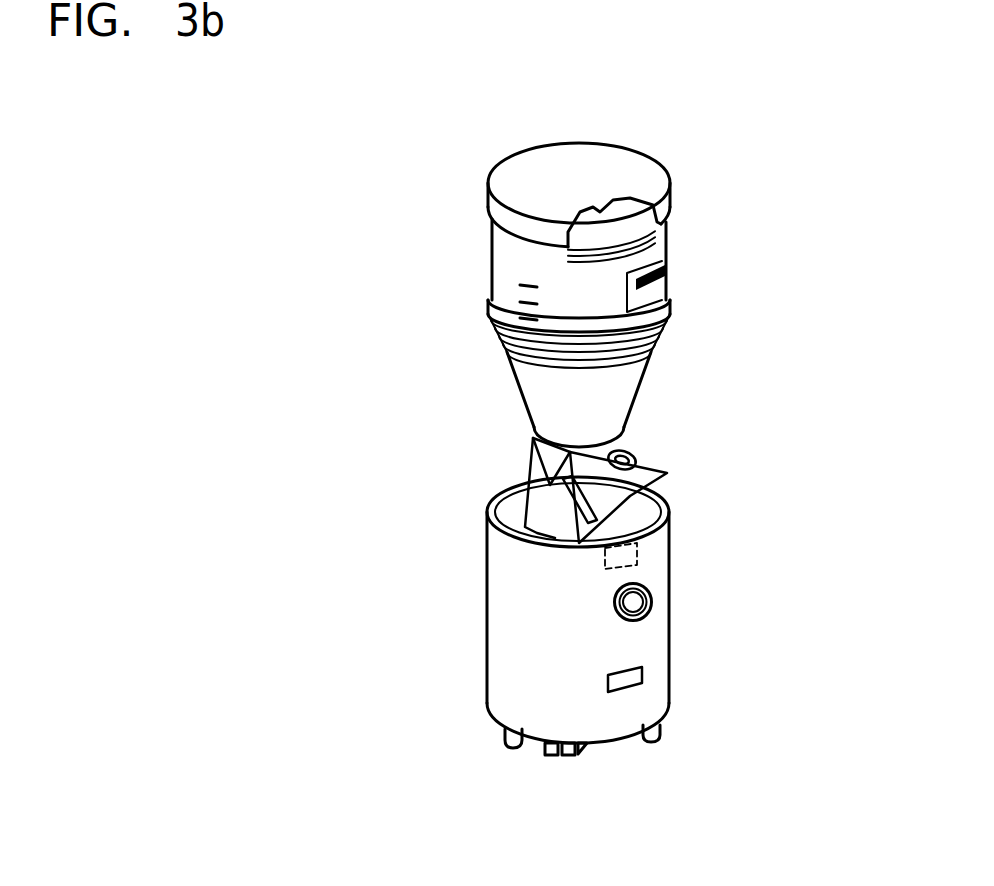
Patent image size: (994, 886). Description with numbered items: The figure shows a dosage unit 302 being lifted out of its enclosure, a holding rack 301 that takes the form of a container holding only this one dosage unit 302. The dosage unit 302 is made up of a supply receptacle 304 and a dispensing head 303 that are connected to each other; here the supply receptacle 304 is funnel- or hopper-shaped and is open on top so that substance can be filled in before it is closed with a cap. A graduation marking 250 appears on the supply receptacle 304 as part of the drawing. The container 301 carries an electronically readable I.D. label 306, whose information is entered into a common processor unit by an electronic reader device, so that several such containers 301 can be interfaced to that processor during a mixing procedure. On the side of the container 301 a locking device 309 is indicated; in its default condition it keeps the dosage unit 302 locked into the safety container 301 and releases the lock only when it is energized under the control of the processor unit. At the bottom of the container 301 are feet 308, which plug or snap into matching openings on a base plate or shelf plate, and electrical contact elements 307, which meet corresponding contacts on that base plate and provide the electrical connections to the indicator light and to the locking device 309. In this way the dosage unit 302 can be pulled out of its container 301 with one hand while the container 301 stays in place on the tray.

The dosage unit 302 is at (504, 121).
The volume graduation mark 250 is at (520, 267).
The supply receptacle 304 is at (560, 398).
The holding rack 301 is at (513, 602).
The locking device 309 is at (622, 557).
The dispensing head 303 is at (640, 605).
The electronically readable I.D. label 306 is at (620, 681).
The feet 308 is at (505, 738).
The electrical contact elements 307 is at (545, 748).